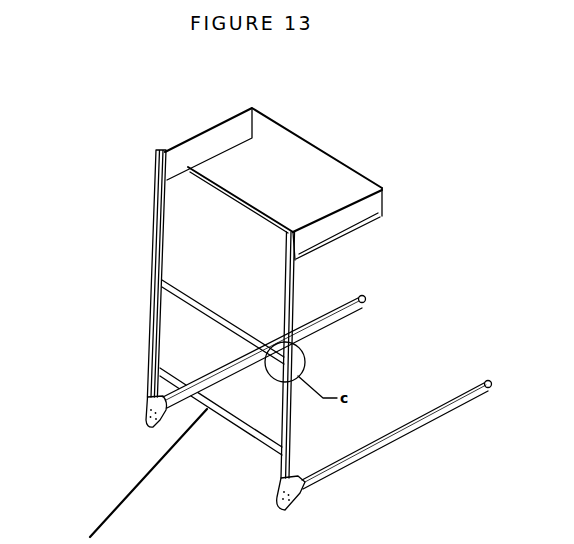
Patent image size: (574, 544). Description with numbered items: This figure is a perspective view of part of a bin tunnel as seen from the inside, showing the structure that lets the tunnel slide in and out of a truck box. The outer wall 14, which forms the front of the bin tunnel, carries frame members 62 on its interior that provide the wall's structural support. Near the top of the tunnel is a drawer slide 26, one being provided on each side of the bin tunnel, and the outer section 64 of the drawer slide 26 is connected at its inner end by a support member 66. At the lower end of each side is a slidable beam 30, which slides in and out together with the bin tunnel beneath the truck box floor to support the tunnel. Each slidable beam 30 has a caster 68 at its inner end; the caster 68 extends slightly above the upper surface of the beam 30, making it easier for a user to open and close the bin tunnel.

The outer wall 14 is at (182, 245).
The drawer slide 26 is at (222, 137).
The slidable beam 30 is at (382, 445).
The frame member 62 is at (253, 204).
The outer section 64 is at (202, 150).
The support member 66 is at (378, 161).
The caster 68 is at (367, 297).